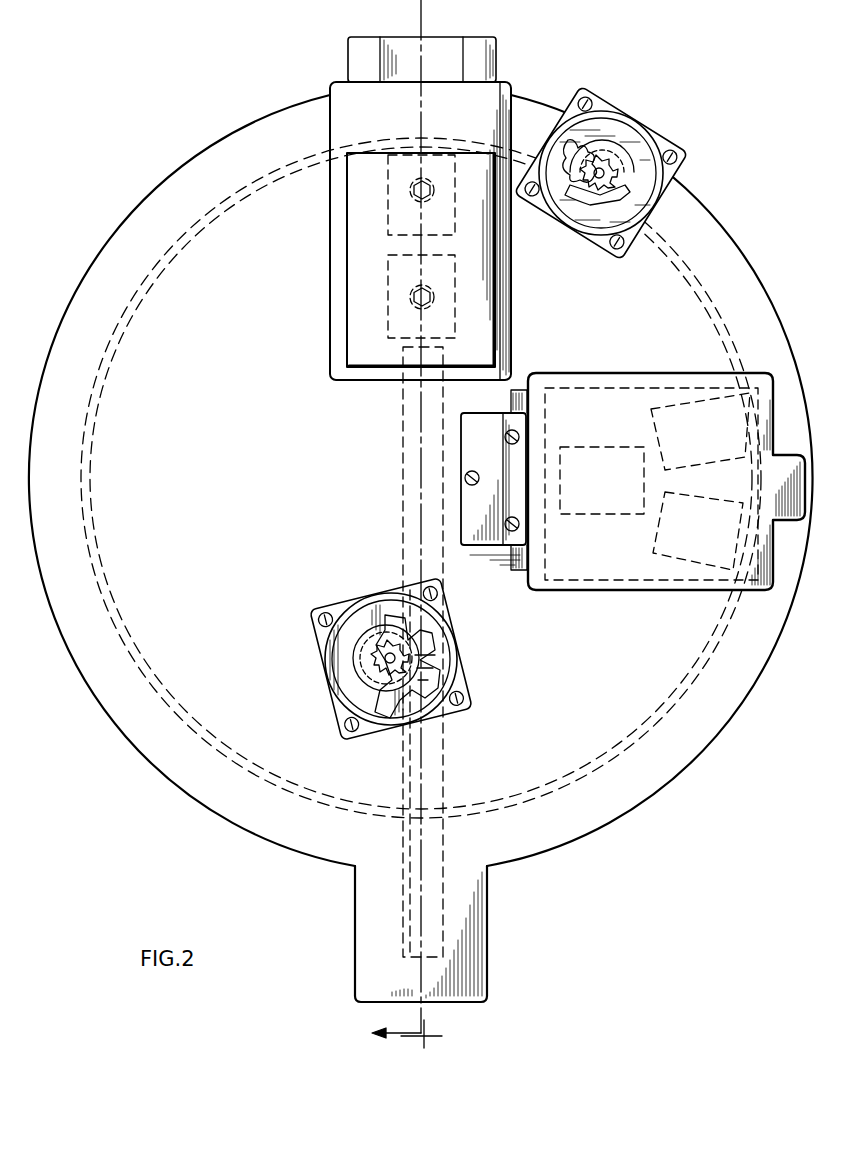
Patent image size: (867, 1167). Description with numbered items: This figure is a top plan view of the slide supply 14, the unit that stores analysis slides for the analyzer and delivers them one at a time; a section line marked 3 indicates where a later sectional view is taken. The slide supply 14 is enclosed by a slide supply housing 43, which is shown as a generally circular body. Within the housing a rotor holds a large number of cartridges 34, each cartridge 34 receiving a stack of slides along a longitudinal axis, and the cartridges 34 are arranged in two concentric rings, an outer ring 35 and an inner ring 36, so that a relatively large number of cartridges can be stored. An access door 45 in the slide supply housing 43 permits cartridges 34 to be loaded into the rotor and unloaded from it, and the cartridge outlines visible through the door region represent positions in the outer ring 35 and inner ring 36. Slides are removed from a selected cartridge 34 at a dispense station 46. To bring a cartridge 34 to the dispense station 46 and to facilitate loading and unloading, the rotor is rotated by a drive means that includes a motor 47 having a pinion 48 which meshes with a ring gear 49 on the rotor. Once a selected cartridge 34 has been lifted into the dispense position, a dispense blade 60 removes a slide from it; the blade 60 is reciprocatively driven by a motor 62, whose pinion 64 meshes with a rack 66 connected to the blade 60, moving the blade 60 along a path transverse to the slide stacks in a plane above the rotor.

The slide supply 14 is at (218, 116).
The slide supply housing 43 is at (650, 808).
The dispense station 46 is at (483, 62).
The motor 47 is at (618, 102).
The pinion 48 is at (638, 165).
The ring gear 49 is at (668, 202).
The access door 45 is at (745, 592).
The cartridge 34 is at (388, 218).
The outer ring 35 is at (380, 182).
The inner ring 36 is at (378, 296).
The dispense blade 60 is at (402, 540).
The motor 62 is at (350, 607).
The pinion 64 is at (430, 645).
The rack 66 is at (430, 668).
The section line 3- 3 is at (398, 1034).